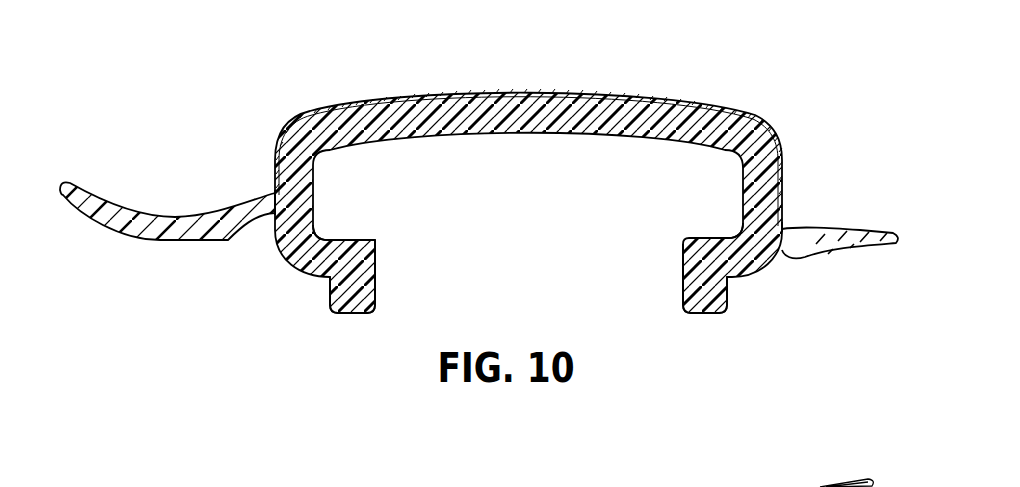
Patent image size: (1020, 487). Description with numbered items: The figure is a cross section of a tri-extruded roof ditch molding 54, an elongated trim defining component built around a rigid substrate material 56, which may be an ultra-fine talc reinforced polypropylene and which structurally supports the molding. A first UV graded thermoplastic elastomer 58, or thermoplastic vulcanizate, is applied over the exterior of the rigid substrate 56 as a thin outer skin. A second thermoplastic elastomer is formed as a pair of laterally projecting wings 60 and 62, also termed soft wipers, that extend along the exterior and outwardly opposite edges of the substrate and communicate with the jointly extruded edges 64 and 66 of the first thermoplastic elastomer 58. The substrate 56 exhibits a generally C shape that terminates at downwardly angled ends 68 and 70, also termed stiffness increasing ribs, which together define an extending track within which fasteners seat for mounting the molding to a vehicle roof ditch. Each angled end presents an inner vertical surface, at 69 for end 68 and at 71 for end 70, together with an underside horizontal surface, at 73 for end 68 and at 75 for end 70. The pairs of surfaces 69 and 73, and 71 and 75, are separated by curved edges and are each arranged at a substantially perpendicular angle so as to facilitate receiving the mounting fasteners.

The tri-extruded roof ditch molding 54 is at (795, 102).
The rigid substrate material 56 is at (487, 138).
The first UV graded thermoplastic elastomer 58 is at (405, 102).
The laterally projecting wing 60 is at (175, 217).
The laterally projecting wing 62 is at (868, 230).
The jointly extruded edge of first thermoplastic elastomer 64 is at (273, 195).
The jointly extruded edge of first thermoplastic elastomer 66 is at (783, 218).
The downwardly angled end 68 is at (360, 314).
The inner vertical surface 69 is at (375, 278).
The downwardly angled end 70 is at (703, 315).
The inner vertical surface 71 is at (683, 270).
The underside horizontal surface 73 is at (353, 240).
The underside horizontal surface 75 is at (707, 240).